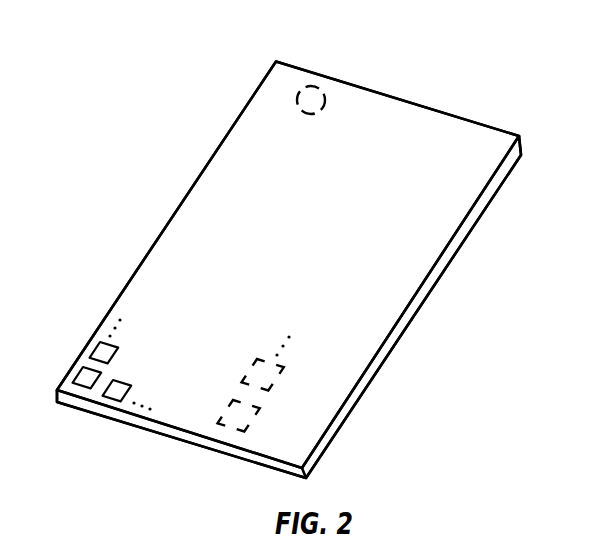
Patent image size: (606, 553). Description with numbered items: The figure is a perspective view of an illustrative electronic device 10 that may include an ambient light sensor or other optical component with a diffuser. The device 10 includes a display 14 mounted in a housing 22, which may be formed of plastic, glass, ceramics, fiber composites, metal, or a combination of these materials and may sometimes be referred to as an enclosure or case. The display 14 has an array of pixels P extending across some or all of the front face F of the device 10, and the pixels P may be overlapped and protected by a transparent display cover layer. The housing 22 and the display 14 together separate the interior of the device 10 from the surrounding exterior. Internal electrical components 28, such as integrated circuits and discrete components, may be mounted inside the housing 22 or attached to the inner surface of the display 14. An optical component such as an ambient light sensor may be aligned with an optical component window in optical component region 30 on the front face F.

The electronic device 10 is at (482, 81).
The display 14 is at (218, 205).
The housing 22 is at (524, 146).
The optical component region 30 is at (319, 89).
The pixels P is at (87, 351).
The internal electrical components 28 is at (256, 360).
The front face F is at (296, 413).